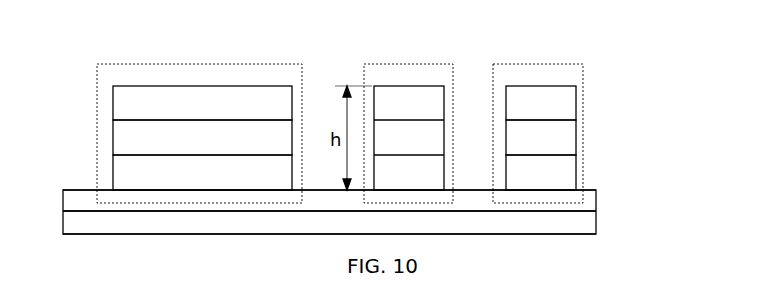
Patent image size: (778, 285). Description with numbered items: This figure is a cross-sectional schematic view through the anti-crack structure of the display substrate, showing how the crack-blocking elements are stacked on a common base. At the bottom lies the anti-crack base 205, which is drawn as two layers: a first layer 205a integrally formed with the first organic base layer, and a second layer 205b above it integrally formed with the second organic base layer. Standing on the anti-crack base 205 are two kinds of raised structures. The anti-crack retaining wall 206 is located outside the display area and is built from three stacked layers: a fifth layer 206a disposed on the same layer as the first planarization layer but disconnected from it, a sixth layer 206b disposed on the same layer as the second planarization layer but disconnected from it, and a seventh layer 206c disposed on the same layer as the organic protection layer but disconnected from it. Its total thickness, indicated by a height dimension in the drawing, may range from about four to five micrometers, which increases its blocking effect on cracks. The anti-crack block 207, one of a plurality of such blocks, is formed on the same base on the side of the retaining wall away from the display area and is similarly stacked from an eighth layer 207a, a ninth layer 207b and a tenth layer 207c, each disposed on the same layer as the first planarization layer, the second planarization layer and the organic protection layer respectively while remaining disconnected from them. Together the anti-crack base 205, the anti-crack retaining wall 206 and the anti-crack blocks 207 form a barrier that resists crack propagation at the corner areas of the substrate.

The anti-crack base 205 is at (393, 210).
The first layer 205a is at (596, 222).
The second layer 205b is at (596, 200).
The anti-crack retaining wall 206 is at (511, 108).
The fifth layer 206a is at (576, 170).
The sixth layer 206b is at (576, 133).
The seventh layer 206c is at (576, 100).
The anti-crack block 207 is at (169, 108).
The eighth layer 207a is at (113, 163).
The ninth layer 207b is at (113, 128).
The tenth layer 207c is at (113, 97).